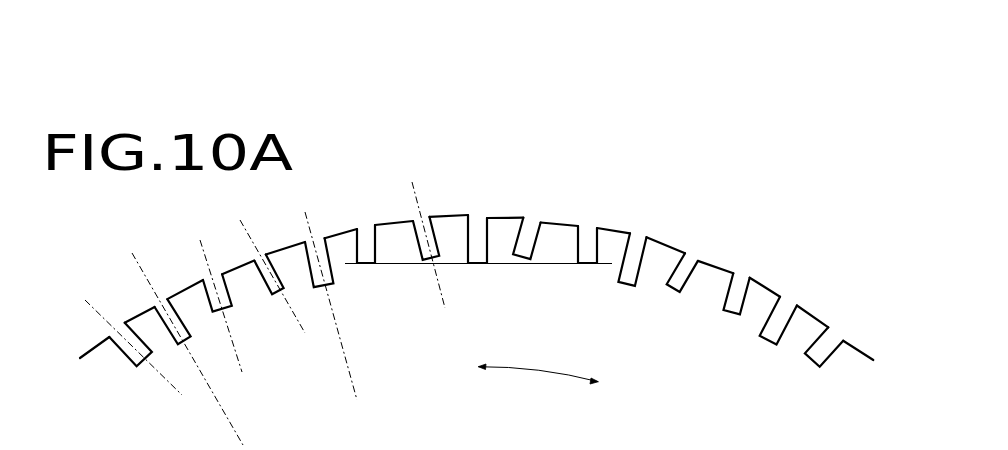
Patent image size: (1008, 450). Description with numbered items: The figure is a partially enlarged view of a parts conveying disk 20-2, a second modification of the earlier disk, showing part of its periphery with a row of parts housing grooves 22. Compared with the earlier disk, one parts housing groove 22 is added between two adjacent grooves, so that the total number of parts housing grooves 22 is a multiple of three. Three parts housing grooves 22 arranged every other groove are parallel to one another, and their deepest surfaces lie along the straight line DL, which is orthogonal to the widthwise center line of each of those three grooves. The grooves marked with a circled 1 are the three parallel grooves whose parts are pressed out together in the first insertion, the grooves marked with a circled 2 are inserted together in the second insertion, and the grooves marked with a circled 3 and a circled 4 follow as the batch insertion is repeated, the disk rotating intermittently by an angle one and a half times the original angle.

The parts conveying disk 20-2 is at (233, 263).
The parts housing groove 22 is at (484, 217).
The straight line DL is at (478, 277).
The circled 1 grooves 1 is at (367, 183).
The circled 2 grooves 2 is at (543, 181).
The third slot type 3 is at (703, 447).
The fourth slot type 4 is at (773, 393).